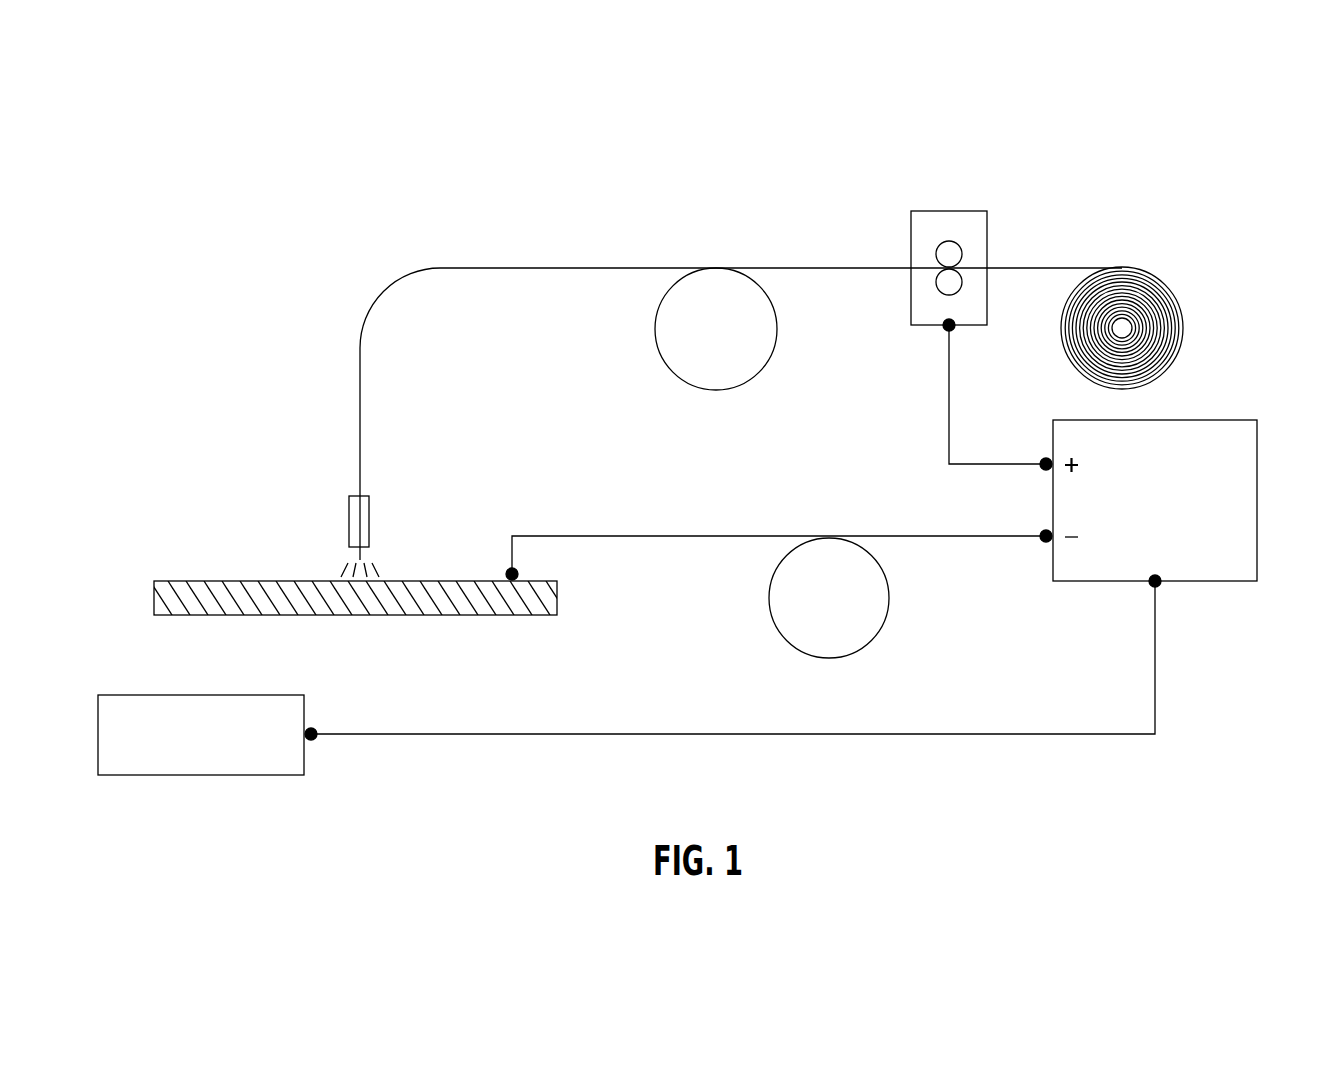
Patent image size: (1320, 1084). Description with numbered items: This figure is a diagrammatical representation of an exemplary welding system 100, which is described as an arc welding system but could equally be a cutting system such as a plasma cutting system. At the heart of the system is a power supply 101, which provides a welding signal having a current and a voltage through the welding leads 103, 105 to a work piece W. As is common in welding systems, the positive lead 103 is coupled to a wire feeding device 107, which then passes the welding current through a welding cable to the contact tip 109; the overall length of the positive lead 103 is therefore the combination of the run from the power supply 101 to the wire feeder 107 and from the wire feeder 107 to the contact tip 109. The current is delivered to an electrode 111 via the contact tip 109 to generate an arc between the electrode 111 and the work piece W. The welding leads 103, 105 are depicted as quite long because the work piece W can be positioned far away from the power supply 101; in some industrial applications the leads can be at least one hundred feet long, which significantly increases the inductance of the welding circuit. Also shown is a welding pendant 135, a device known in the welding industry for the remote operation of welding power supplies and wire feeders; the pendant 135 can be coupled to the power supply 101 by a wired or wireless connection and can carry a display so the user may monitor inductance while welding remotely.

The welding system 100 is at (752, 148).
The power supply 101 is at (1205, 420).
The positive lead 103 is at (822, 268).
The welding lead 105 is at (889, 598).
The wire feeding device 107 is at (969, 211).
The contact tip 109 is at (369, 513).
The electrode 111 is at (345, 562).
The work piece W is at (498, 615).
The welding pendant 135 is at (252, 775).